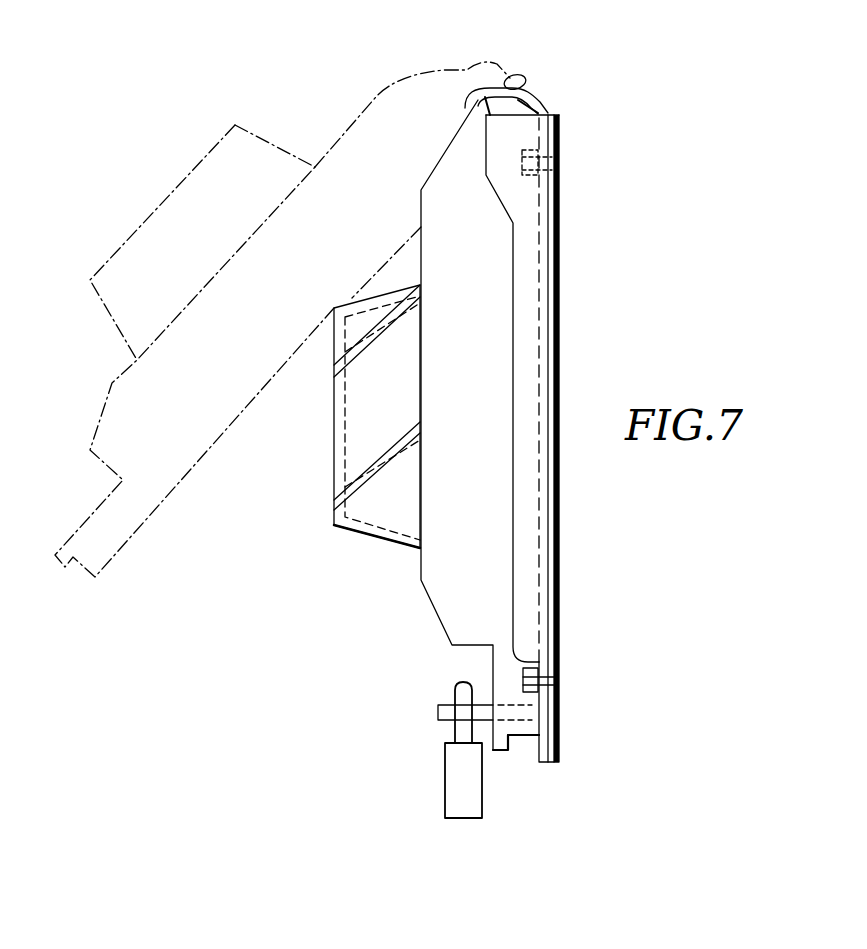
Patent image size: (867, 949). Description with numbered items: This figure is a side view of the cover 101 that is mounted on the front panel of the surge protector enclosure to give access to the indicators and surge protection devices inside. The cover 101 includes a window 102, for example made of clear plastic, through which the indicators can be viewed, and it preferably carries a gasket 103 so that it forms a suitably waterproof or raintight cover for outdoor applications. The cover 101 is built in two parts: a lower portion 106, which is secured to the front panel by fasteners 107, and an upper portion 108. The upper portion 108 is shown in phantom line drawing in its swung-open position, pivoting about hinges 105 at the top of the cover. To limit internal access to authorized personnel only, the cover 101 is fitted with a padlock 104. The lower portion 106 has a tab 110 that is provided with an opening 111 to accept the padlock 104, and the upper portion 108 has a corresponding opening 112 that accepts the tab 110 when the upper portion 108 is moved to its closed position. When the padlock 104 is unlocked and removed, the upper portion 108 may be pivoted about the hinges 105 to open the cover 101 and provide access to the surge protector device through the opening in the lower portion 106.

The cover 101 is at (272, 619).
The window 102 is at (334, 468).
The gasket 103 is at (560, 228).
The padlock 104 is at (445, 777).
The hinges 105 is at (543, 76).
The lower portion 106 is at (541, 312).
The fasteners 107 is at (532, 157).
The upper portion 108 is at (432, 592).
The tab 110 is at (438, 706).
The opening 111 is at (438, 715).
The opening 112 is at (513, 722).